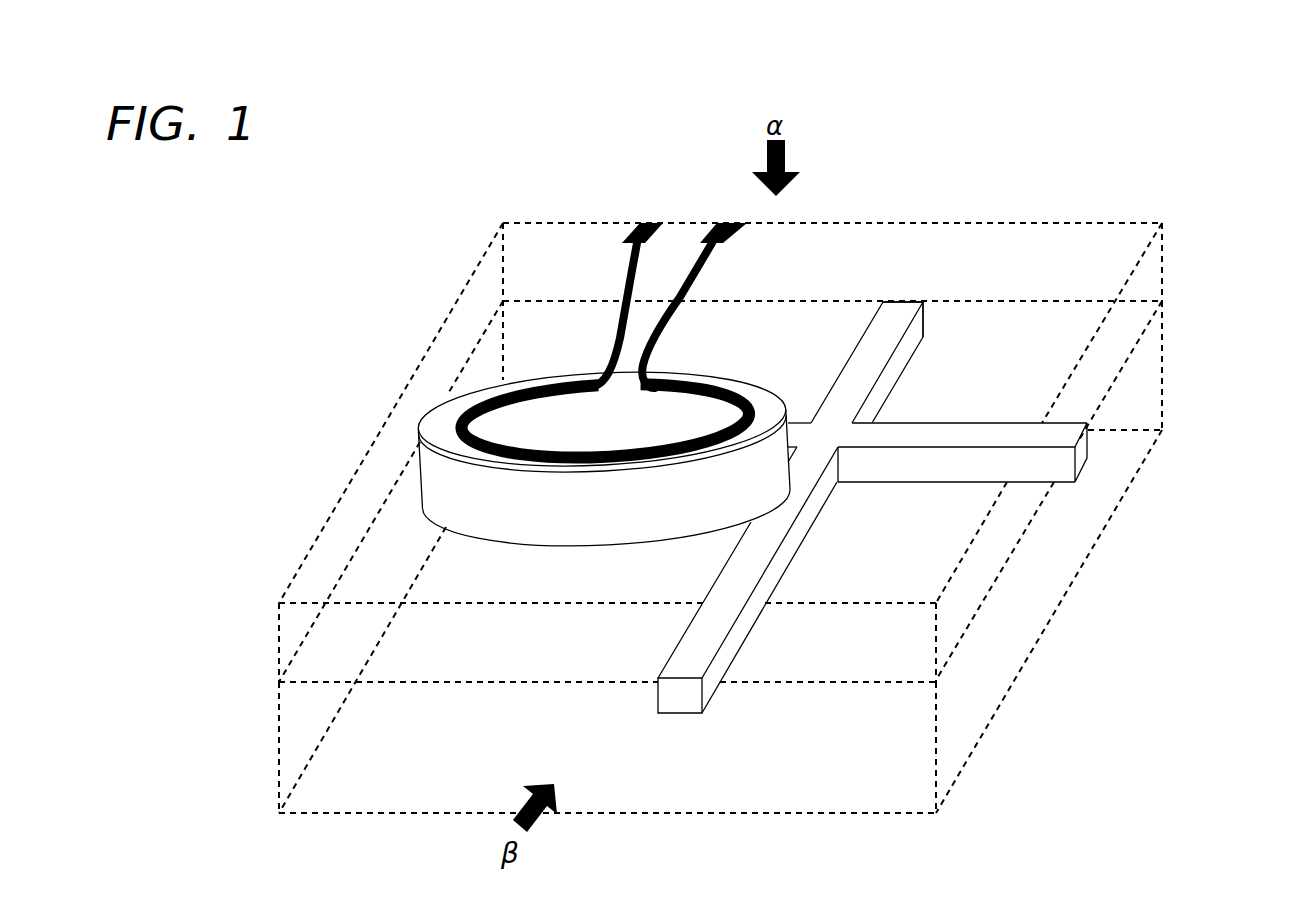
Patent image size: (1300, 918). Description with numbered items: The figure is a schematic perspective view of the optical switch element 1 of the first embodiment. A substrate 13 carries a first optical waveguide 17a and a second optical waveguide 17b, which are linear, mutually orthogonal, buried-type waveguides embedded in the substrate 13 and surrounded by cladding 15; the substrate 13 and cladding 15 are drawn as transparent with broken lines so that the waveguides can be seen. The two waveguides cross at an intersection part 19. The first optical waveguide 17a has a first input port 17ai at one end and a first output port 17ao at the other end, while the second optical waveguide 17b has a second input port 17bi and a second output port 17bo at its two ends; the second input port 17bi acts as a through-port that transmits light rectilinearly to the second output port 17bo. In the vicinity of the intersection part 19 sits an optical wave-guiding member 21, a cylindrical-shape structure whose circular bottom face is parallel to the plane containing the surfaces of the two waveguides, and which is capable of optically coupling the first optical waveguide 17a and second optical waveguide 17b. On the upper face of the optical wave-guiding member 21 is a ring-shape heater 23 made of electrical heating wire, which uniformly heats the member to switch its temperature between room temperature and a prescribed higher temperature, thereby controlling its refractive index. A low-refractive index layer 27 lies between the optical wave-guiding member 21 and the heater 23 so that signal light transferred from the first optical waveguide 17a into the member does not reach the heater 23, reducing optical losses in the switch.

The magnetic sensor 1 is at (1229, 216).
The substrate 13 is at (292, 748).
The cladding 15 is at (292, 635).
The first optical waveguide 17a is at (1013, 430).
The first input port 17ai is at (404, 440).
The first output port 17ao is at (1077, 450).
The second optical waveguide 17b is at (893, 330).
The second input port 17bi is at (914, 298).
The second output port 17bo is at (676, 698).
The intersection part 19 is at (822, 437).
The optical wave-guiding member 21 is at (452, 490).
The heater 23 is at (502, 395).
The low-refractive index layer 27 is at (442, 420).